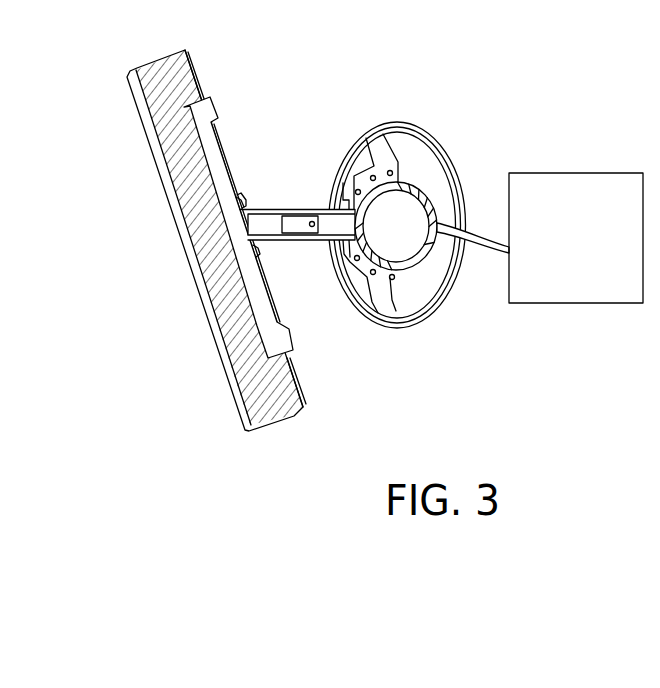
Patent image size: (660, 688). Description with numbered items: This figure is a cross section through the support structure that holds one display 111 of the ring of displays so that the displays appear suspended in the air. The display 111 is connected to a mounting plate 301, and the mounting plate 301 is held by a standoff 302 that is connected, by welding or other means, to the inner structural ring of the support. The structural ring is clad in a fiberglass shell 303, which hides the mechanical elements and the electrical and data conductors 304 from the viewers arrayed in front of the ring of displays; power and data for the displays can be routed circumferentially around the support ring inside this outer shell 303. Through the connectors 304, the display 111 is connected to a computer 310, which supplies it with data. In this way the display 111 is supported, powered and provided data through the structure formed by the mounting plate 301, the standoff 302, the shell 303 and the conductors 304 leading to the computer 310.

The display 111 is at (181, 63).
The mounting plate 301 is at (208, 163).
The standoff 302 is at (295, 226).
The fiberglass shell 303 is at (416, 125).
The connectors 304 is at (437, 224).
The computer 310 is at (595, 303).